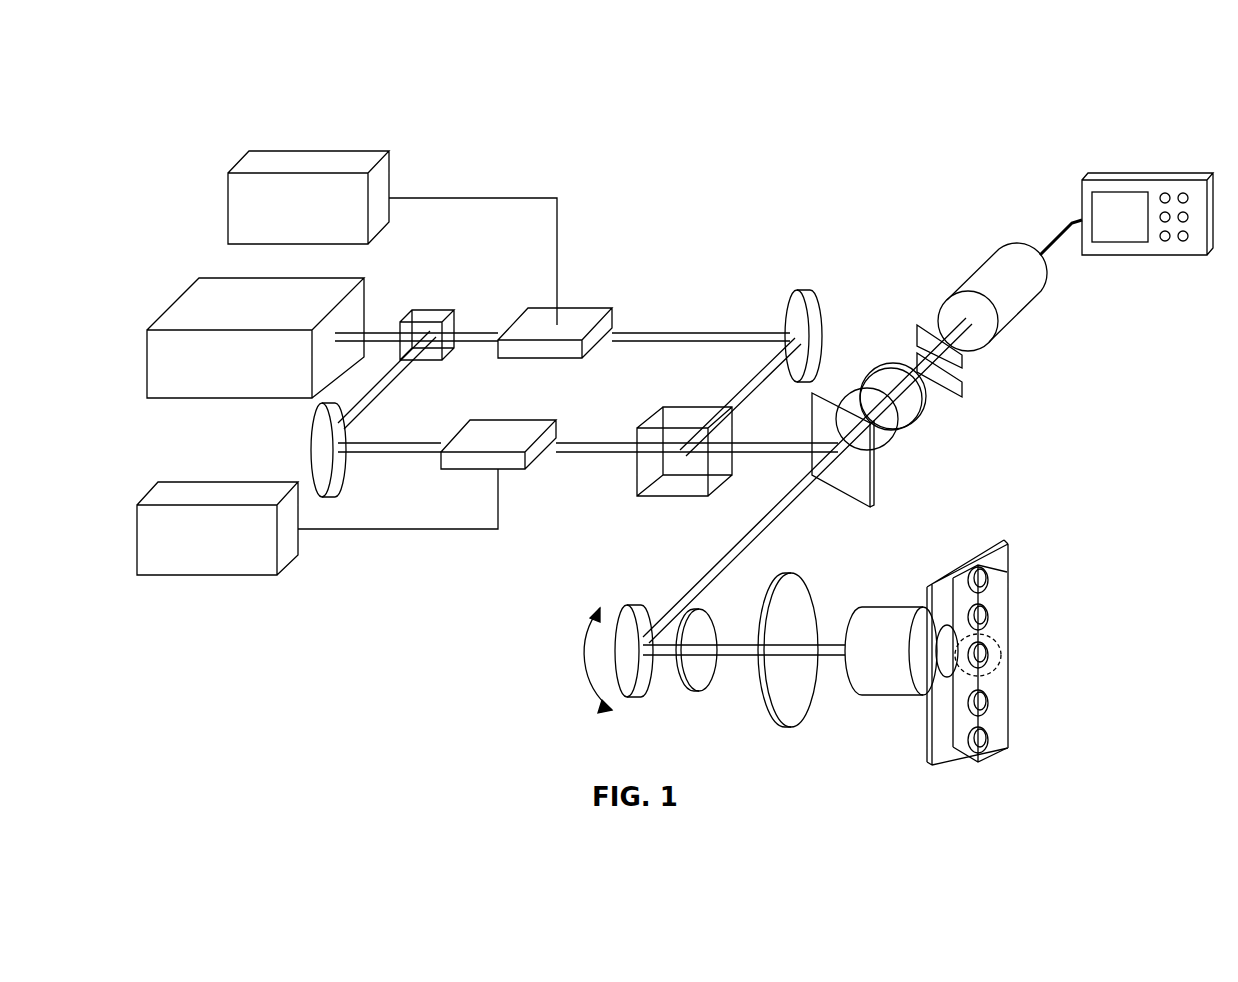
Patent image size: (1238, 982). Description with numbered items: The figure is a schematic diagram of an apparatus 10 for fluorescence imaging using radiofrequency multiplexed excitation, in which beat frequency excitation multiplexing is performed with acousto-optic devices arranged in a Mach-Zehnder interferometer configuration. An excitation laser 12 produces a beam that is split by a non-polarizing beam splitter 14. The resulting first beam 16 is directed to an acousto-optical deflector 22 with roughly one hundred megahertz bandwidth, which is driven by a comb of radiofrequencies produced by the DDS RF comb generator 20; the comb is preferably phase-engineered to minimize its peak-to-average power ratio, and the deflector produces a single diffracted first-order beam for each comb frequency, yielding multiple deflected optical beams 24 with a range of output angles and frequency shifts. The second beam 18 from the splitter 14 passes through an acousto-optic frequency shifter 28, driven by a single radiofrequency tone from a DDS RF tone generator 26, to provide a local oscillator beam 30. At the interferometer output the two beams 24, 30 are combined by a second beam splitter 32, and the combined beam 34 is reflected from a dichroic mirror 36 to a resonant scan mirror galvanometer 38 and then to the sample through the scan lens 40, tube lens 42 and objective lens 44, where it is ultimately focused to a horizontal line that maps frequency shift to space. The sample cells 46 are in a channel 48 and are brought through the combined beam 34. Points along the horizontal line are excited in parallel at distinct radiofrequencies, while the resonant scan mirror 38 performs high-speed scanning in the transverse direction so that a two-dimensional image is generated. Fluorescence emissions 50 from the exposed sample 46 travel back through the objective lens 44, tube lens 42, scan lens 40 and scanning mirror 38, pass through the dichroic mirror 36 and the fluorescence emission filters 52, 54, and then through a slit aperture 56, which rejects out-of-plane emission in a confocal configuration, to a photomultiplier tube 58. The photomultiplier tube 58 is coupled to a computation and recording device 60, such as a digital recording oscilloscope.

The apparatus 10 is at (166, 86).
The excitation laser 12 is at (205, 278).
The non-polarizing beam splitter 14 is at (423, 360).
The first beam 16 is at (490, 325).
The second beam 18 is at (430, 442).
The DDS RF comb generator 20 is at (228, 190).
The acousto-optical deflector (AOD) 22 is at (597, 307).
The deflected optical beams 24 is at (677, 332).
The DDS RF tone generator 26 is at (192, 482).
The acousto-optic frequency shifter (AOFS) 28 is at (515, 470).
The local oscillator beam 30 is at (618, 440).
The second beam splitter 32 is at (647, 497).
The combined beam 34 is at (797, 440).
The dichroic mirror 36 is at (873, 493).
The resonant scan mirror galvanometer 38 is at (637, 698).
The scan lens 40 is at (702, 692).
The tube lens 42 is at (762, 602).
The objective lens 44 is at (895, 607).
The sample cells 46 is at (990, 692).
The channel 48 is at (1008, 590).
The fluorescence emissions 50 is at (698, 575).
The fluorescence emission filter 52 is at (893, 443).
The fluorescence emission filter 54 is at (925, 415).
The slit aperture 56 is at (967, 365).
The photomultiplier tube (PMT) 58 is at (995, 250).
The computation and recording device 60 is at (1132, 172).